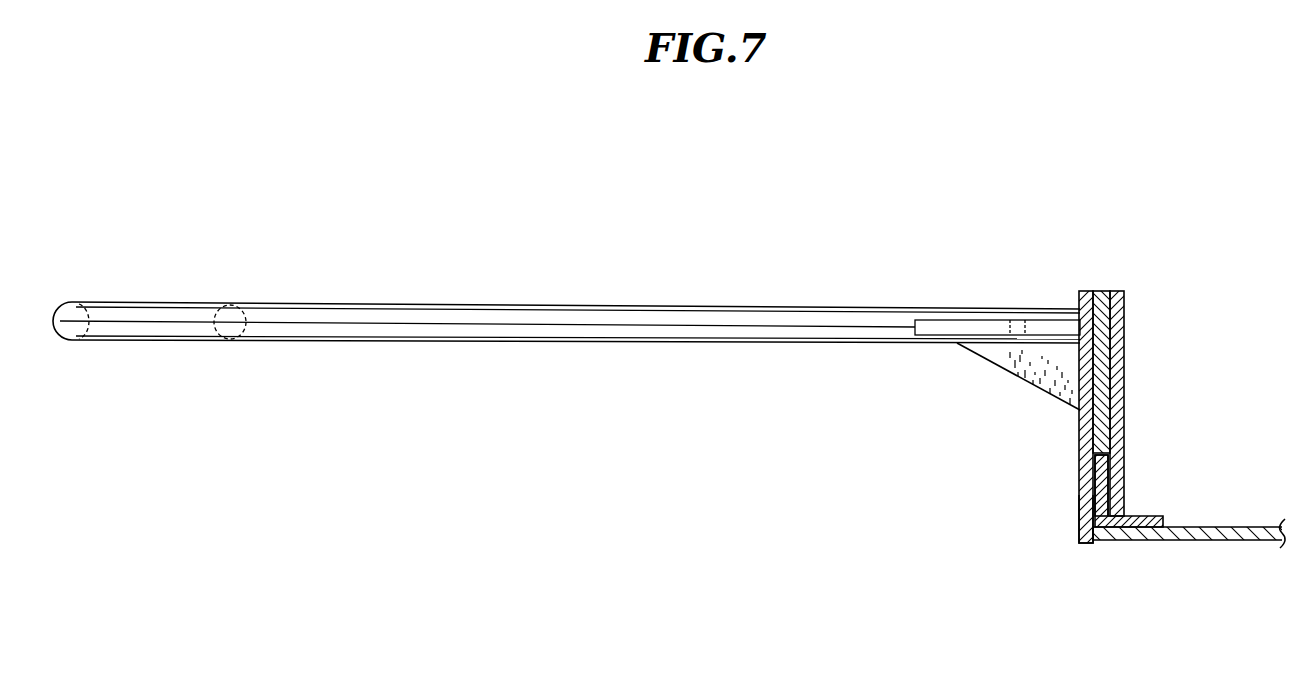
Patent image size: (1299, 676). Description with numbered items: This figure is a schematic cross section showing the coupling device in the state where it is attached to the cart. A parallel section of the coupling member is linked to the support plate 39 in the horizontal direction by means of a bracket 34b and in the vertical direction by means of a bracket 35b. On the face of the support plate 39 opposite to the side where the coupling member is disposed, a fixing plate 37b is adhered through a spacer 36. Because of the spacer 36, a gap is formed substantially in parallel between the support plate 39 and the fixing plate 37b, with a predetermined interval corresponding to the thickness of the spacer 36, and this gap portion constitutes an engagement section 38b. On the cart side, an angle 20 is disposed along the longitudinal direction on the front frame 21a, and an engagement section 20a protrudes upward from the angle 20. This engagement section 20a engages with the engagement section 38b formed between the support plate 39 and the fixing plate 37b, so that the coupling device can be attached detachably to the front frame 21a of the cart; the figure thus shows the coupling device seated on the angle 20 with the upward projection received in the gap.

The bracket 34b is at (958, 318).
The spacer 36 is at (1100, 291).
The bracket 35b is at (1012, 374).
The engagement section 20a is at (1100, 453).
The fixing plate 37b is at (1124, 472).
The angle 20 is at (1140, 516).
The front frame 21a is at (1210, 540).
The support plate 39 is at (1078, 484).
The engagement section 38b is at (1078, 512).